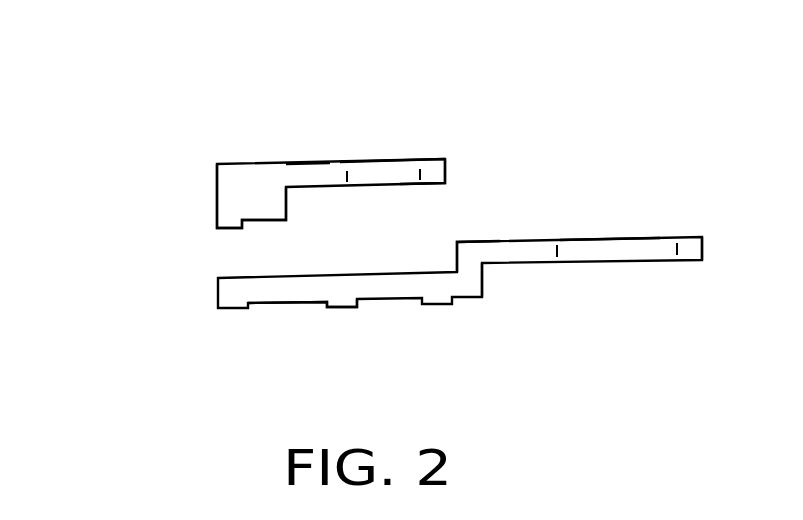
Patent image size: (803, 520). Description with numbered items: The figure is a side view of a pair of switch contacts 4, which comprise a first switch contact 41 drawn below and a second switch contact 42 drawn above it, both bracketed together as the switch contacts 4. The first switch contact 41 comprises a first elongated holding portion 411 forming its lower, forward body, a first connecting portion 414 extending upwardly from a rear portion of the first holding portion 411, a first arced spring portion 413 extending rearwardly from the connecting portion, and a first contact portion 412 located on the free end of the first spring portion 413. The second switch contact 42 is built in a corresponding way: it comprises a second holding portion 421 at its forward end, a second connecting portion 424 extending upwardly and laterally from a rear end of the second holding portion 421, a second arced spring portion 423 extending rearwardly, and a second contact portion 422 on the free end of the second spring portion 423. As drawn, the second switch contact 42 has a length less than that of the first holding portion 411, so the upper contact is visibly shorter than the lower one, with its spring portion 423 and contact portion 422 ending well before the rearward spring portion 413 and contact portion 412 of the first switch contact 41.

The switch contacts 4 is at (91, 172).
The first switch contact 41 is at (198, 291).
The second switch contact 42 is at (200, 193).
The first elongated holding portion 411 is at (291, 293).
The first contact portion 412 is at (690, 247).
The first arced spring portion 413 is at (622, 247).
The first connecting portion 414 is at (505, 252).
The second holding portion 421 is at (268, 187).
The second contact portion 422 is at (435, 183).
The second arced spring portion 423 is at (388, 173).
The second connecting portion 424 is at (307, 173).